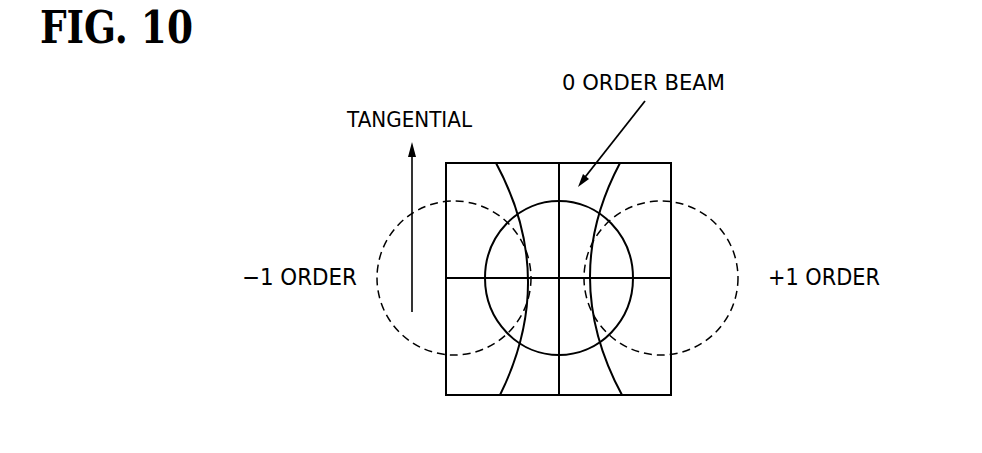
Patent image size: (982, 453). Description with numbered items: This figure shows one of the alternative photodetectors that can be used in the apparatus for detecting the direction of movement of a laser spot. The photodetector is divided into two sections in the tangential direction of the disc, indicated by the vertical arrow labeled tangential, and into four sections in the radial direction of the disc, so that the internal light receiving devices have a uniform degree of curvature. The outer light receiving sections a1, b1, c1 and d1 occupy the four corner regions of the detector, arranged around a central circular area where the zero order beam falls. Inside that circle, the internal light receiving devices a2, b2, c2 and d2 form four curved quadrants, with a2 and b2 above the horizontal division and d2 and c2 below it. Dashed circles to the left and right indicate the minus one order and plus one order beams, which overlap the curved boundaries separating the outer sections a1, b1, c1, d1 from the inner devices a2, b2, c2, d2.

The light receiving section a1 is at (502, 220).
The light receiving section b1 is at (615, 220).
The light receiving section c1 is at (615, 336).
The light receiving section d1 is at (502, 336).
The internal light receiving device a2 is at (522, 239).
The internal light receiving device b2 is at (596, 239).
The internal light receiving device c2 is at (596, 316).
The internal light receiving device d2 is at (522, 316).